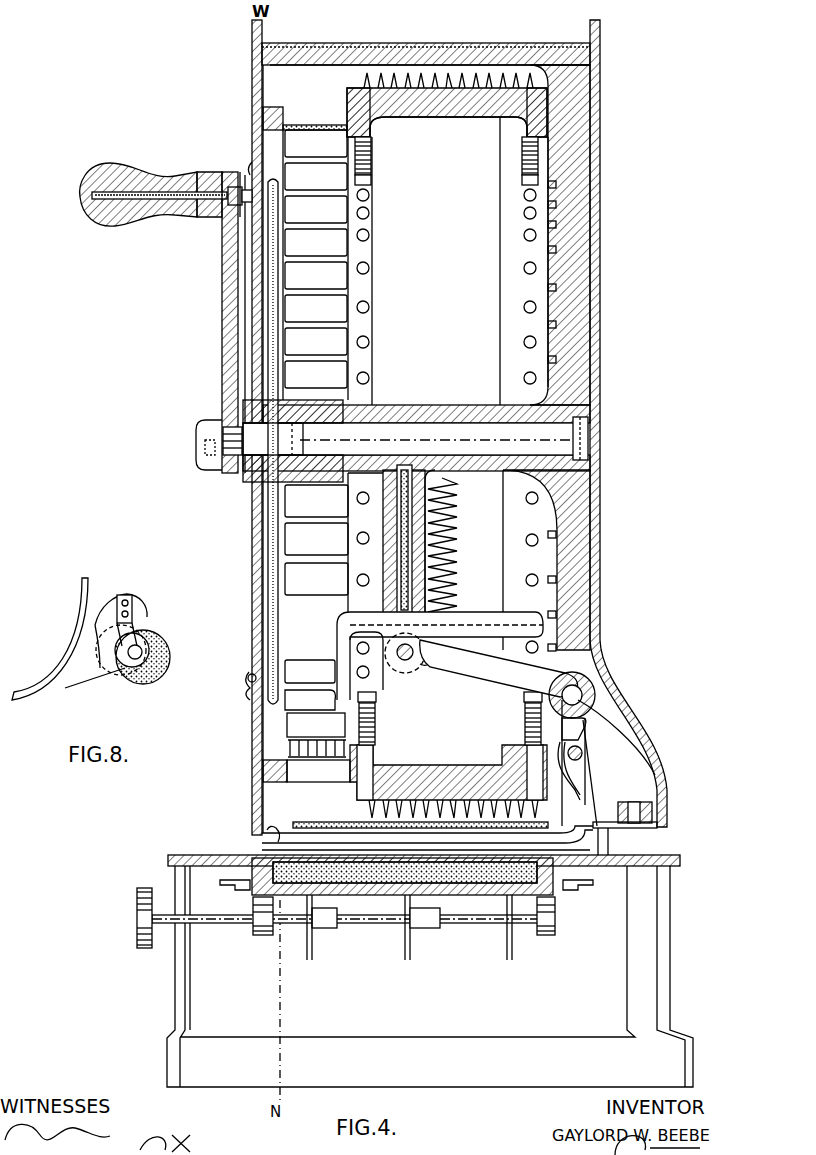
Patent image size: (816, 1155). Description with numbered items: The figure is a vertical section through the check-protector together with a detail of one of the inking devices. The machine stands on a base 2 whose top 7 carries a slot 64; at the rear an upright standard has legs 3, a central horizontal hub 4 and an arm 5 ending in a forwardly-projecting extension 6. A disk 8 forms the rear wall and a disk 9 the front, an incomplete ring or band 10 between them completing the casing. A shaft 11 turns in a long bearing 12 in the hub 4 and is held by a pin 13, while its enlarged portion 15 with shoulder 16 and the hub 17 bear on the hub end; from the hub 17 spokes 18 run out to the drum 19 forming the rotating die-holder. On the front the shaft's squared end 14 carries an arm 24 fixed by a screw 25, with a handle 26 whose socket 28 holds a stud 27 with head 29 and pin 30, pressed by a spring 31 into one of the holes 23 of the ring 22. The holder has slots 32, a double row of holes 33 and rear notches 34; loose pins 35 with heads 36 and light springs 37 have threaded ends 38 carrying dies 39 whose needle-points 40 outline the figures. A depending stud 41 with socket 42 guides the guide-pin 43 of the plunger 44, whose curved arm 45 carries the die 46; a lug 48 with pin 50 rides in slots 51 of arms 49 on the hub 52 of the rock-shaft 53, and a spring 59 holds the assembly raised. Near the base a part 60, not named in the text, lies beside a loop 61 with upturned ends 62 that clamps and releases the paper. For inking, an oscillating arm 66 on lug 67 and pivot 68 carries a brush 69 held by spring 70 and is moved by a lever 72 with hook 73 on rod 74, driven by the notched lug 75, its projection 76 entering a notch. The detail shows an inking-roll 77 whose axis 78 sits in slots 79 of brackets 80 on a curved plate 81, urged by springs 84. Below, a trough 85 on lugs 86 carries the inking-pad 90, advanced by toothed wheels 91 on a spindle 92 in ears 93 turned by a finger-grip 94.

In FIG. 4, the base 2 is at (660, 955).
In FIG. 4, the legs 3 is at (565, 815).
In FIG. 4, the central horizontal hub 4 is at (450, 412).
In FIG. 4, the arm 5 is at (594, 186).
In FIG. 4, the forwardly-projecting extension 6 is at (372, 58).
In FIG. 4, the top 7 is at (205, 857).
In FIG. 4, the disk 8 is at (600, 134).
In FIG. 4, the disk 9 is at (256, 130).
In FIG. 4, the incomplete ring or band 10 is at (424, 58).
In FIG. 4, the shaft 11 is at (386, 438).
In FIG. 4, the long bearing 12 is at (497, 438).
In FIG. 4, the pin 13 is at (590, 418).
In FIG. 4, the squared end 14 is at (232, 447).
In FIG. 4, the enlarged portion 15 is at (254, 457).
In FIG. 4, the shoulder 16 is at (340, 435).
In FIG. 4, the hub 17 is at (323, 404).
In FIG. 4, the spokes 18 is at (275, 320).
In FIG. 4, the drum, cylinder, or ring 19 is at (270, 114).
In FIG. 4, the ring 22 is at (251, 170).
In FIG. 4, the holes or depressions 23 is at (250, 680).
In FIG. 4, the arm 24 is at (222, 270).
In FIG. 4, the screw 25 is at (203, 428).
In FIG. 4, the handle 26 is at (108, 222).
In FIG. 4, the stud 27 is at (203, 180).
In FIG. 4, the socket 28 is at (204, 210).
In FIG. 4, the head 29 is at (232, 186).
In FIG. 4, the pin 30 is at (248, 185).
In FIG. 4, the spring 31 is at (215, 207).
In FIG. 4, the rectangular slots or openings 32 is at (294, 116).
In FIG. 4, the holes 33 is at (372, 130).
In FIG. 4, the notches 34 is at (557, 192).
In FIG. 4, the loose pins 35 is at (371, 142).
In FIG. 4, the heads 36 is at (372, 180).
In FIG. 4, the light springs 37 is at (372, 160).
In FIG. 4, the reduced threaded ends 38 is at (360, 96).
In FIG. 4, the dies 39 is at (459, 88).
In FIG. 4, the needle-points 40 is at (504, 84).
In FIG. 4, the depending stud 41 is at (385, 519).
In FIG. 4, the socket 42 is at (386, 487).
In FIG. 4, the guide-pin 43 is at (400, 590).
In FIG. 4, the plunger 44 is at (473, 614).
In FIG. 4, the downwardly-curved arm or extension 45 is at (336, 674).
In FIG. 4, the die 46 is at (306, 747).
In FIG. 4, the lug 48 is at (412, 668).
In FIG. 4, the arms 49 is at (499, 668).
In FIG. 4, the pin 50 is at (405, 660).
In FIG. 4, the slots 51 is at (433, 655).
In FIG. 4, the hub 52 is at (590, 683).
In FIG. 4, the rock-shaft 53 is at (583, 697).
In FIG. 4, the spring 59 is at (445, 526).
In FIG. 4, the bottom plate 60 is at (260, 840).
In FIG. 4, the loop 61 is at (280, 838).
In FIG. 4, the upwardly-turned ends 62 is at (586, 731).
In FIG. 4, the slot 64 is at (284, 851).
In FIG. 4, the oscillating arm 66 is at (622, 829).
In FIG. 4, the lug 67 is at (655, 810).
In FIG. 4, the stud and pivot pin or screw 68 is at (654, 813).
In FIG. 4, the brush 69 is at (318, 830).
In FIG. 4, the spring 70 is at (288, 793).
In FIG. 4, the lever 72 is at (600, 800).
In FIG. 4, the hook 73 is at (583, 753).
In FIG. 4, the rod 74 is at (657, 766).
In FIG. 4, the notched or recessed lug 75 is at (588, 728).
In FIG. 4, the lug or projection 76 is at (579, 773).
In FIG. 8, the inking-roll 77 is at (167, 636).
In FIG. 8, the axis 78 is at (155, 680).
In FIG. 8, the slots 79 is at (122, 684).
In FIG. 8, the brackets 80 is at (105, 673).
In FIG. 8, the curved plate 81 is at (79, 639).
In FIG. 8, the springs 84 is at (133, 618).
In FIG. 4, the shallow trough 85 is at (464, 896).
In FIG. 4, the lugs 86 is at (219, 870).
In FIG. 4, the flat inking-pad 90 is at (490, 896).
In FIG. 4, the toothed wheels 91 is at (408, 965).
In FIG. 4, the spindle 92 is at (368, 924).
In FIG. 4, the ears 93 is at (262, 936).
In FIG. 4, the finger-grip 94 is at (138, 920).